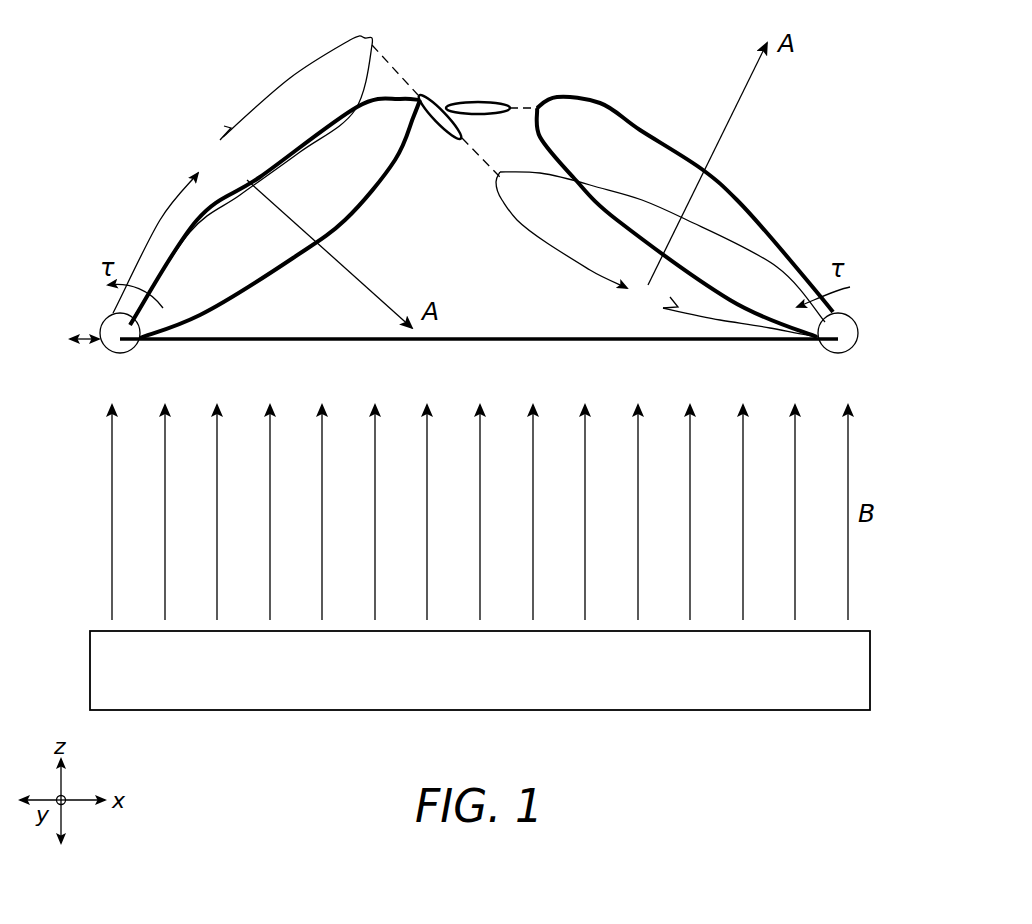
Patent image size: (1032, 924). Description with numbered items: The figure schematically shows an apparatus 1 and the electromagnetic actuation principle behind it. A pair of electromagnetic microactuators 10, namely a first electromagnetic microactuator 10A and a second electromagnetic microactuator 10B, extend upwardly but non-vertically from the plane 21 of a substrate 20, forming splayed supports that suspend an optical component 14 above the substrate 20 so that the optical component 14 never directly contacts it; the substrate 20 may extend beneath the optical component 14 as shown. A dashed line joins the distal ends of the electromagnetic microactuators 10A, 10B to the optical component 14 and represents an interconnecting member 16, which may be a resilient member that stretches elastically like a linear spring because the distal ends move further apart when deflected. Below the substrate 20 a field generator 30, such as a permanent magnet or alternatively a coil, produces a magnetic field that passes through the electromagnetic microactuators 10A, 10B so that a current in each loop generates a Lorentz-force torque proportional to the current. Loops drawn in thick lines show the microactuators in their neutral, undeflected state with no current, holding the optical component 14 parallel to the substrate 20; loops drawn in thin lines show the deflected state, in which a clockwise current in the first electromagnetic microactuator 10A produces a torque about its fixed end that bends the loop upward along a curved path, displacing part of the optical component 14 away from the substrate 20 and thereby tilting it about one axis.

The apparatus 1 is at (120, 77).
The electromagnetic microactuator 10 is at (293, 258).
The first electromagnetic microactuator 10A is at (282, 83).
The second electromagnetic microactuator 10B is at (590, 100).
The optical component 14 is at (480, 101).
The interconnecting member 16 is at (530, 106).
The substrate 20 is at (767, 342).
The plane of the substrate 21 is at (85, 342).
The field generator 30 is at (870, 643).